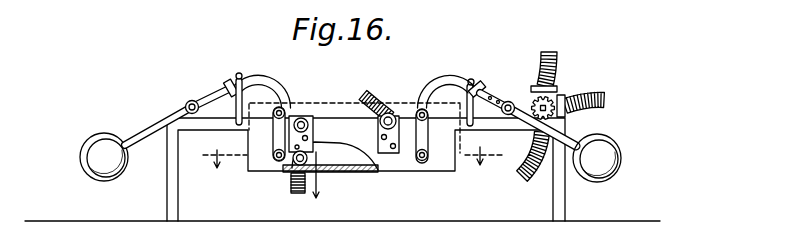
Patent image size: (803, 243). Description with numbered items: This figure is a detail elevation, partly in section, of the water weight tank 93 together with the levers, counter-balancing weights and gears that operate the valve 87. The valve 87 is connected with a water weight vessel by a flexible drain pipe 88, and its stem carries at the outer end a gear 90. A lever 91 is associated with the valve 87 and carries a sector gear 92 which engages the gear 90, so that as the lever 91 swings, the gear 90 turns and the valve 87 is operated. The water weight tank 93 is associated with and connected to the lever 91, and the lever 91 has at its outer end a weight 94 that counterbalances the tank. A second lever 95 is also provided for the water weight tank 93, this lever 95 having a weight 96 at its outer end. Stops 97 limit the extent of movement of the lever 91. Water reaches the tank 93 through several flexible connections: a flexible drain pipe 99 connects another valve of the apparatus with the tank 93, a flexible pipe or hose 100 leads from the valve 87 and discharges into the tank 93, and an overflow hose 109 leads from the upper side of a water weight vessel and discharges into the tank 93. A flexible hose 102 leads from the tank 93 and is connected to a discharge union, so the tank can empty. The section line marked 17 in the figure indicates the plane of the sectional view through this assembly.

The feed pipe 17 is at (355, 171).
The valve 87 is at (553, 98).
The flexible drain pipe 88 is at (557, 65).
The gear 90 is at (536, 101).
The lever 91 is at (455, 78).
The sector gear 92 is at (505, 118).
The water weight tank 93 is at (398, 163).
The weight 94 is at (598, 158).
The lever 95 is at (210, 93).
The weight 96 is at (105, 143).
The stop 97 is at (241, 75).
The flexible drain pipe 99 is at (368, 95).
The flexible pipe or hose 100 is at (391, 114).
The flexible hose 102 is at (292, 175).
The overflow hose 109 is at (302, 120).